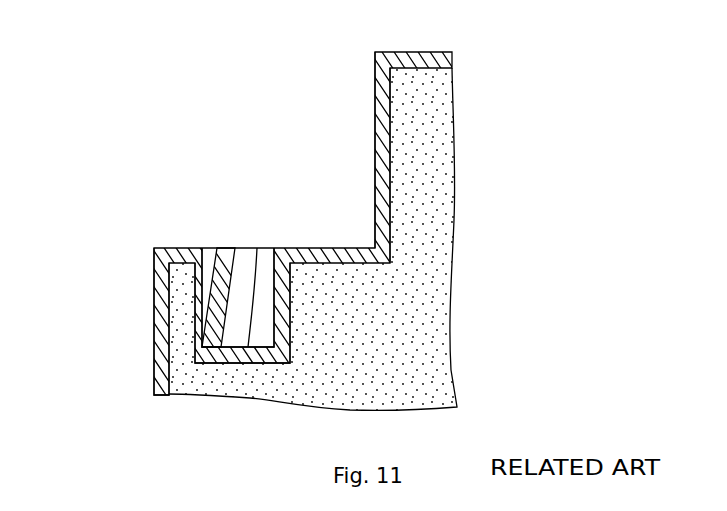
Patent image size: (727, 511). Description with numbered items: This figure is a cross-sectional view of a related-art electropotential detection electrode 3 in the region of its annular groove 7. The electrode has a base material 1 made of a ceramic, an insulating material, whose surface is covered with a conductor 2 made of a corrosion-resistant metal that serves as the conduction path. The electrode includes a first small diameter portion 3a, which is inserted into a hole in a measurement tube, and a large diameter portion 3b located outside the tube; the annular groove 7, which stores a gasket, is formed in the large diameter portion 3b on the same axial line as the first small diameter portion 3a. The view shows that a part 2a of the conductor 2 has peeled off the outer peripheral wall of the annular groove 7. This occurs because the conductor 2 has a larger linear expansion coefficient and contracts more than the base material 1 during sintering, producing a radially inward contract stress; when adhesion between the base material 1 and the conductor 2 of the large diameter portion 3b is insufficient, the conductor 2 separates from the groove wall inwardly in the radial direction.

The base material 1 is at (435, 147).
The conductor 2 is at (154, 290).
The part of the conductor 2a is at (233, 270).
The electropotential detection electrode 3 is at (374, 73).
The first small diameter portion 3a is at (375, 102).
The large diameter portion 3b is at (154, 347).
The annular groove 7 is at (257, 248).